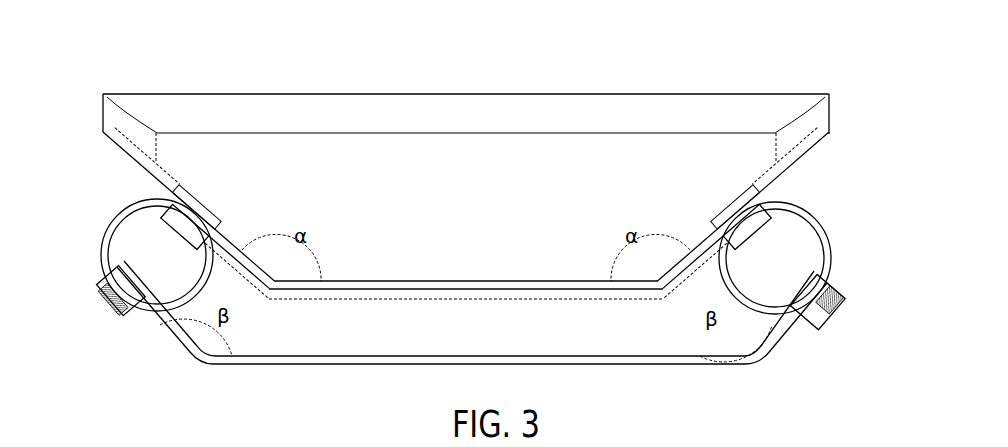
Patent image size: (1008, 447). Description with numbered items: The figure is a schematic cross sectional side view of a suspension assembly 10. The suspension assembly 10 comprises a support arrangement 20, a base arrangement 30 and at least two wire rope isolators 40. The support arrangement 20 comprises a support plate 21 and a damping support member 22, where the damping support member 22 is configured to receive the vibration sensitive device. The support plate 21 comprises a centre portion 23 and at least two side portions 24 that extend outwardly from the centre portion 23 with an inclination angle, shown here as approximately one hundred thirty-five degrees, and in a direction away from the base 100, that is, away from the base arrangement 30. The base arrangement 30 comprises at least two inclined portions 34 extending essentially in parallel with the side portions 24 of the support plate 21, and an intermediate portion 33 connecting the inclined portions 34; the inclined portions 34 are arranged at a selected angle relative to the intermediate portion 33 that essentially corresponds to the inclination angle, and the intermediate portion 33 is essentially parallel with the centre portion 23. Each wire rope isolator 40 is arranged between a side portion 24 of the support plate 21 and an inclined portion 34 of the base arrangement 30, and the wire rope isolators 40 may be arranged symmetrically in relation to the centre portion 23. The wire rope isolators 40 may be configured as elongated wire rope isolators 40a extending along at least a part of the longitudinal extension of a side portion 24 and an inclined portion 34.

The suspension assembly 10 is at (633, 0).
The support arrangement 20 is at (465, 220).
The support plate 21 is at (503, 287).
The damping support member 22 is at (644, 93).
The centre portion 23 is at (580, 287).
The side portion 24 is at (240, 270).
The base arrangement 30 is at (463, 352).
The intermediate portion 33 is at (420, 365).
The inclined portion 34 is at (130, 322).
The wire rope isolator 40 is at (462, 235).
The elongated wire rope isolator 40a is at (98, 233).
The base 100 is at (615, 401).